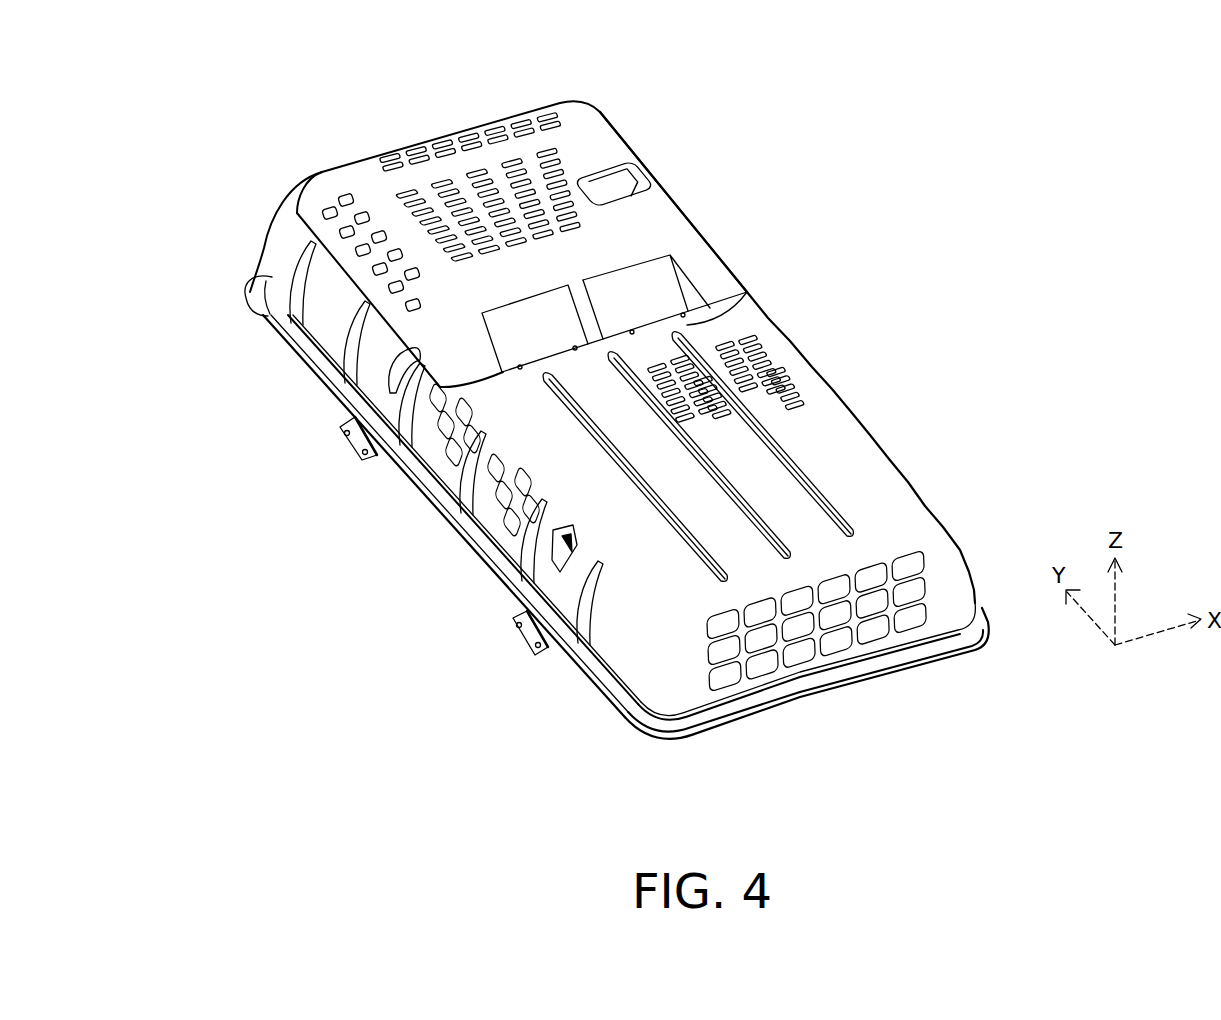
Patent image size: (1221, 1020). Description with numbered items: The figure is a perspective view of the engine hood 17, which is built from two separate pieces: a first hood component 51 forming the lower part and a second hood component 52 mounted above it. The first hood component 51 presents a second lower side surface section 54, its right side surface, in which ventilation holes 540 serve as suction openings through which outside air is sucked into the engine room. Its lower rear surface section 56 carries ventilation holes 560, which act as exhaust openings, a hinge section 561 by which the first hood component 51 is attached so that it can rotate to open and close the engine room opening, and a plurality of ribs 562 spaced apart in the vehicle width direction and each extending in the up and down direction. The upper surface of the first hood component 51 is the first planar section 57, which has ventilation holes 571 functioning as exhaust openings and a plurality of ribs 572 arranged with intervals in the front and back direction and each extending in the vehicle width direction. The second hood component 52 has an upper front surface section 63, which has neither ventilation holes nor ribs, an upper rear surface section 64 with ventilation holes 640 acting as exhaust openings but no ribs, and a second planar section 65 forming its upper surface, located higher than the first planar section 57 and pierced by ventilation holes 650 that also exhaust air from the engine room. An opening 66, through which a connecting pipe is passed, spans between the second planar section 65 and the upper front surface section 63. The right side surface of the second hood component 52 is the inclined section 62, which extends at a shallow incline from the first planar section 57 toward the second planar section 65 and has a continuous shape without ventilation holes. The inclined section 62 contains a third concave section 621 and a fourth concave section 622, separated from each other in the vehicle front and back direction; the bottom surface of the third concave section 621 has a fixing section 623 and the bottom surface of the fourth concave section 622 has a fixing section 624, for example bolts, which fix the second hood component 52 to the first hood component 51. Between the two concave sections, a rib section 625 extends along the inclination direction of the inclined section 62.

The engine hood 17 is at (778, 127).
The first hood component 51 is at (830, 448).
The second hood component 52 is at (560, 190).
The second lower side surface section 54 is at (823, 657).
The ventilation holes 540 is at (763, 660).
The lower rear surface section 56 is at (425, 465).
The ventilation holes 560 is at (470, 515).
The hinge section 561 is at (340, 433).
The ribs 562 is at (350, 343).
The first planar section 57 is at (735, 543).
The ventilation holes 571 is at (684, 392).
The ribs 572 is at (693, 534).
The inclined section 62 is at (713, 280).
The third concave section 621 is at (440, 455).
The fourth concave section 622 is at (650, 283).
The fixing section 623 is at (492, 502).
The fixing section 624 is at (731, 310).
The rib section 625 is at (597, 312).
The upper front surface section 63 is at (686, 212).
The upper rear surface section 64 is at (362, 272).
The ventilation holes 640 is at (343, 229).
The second planar section 65 is at (422, 177).
The ventilation holes 650 is at (488, 210).
The opening 66 is at (602, 190).